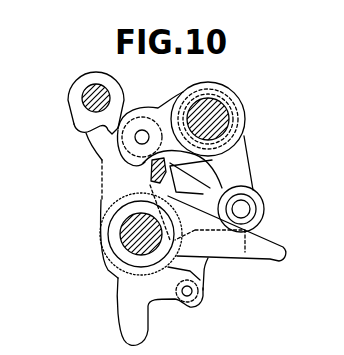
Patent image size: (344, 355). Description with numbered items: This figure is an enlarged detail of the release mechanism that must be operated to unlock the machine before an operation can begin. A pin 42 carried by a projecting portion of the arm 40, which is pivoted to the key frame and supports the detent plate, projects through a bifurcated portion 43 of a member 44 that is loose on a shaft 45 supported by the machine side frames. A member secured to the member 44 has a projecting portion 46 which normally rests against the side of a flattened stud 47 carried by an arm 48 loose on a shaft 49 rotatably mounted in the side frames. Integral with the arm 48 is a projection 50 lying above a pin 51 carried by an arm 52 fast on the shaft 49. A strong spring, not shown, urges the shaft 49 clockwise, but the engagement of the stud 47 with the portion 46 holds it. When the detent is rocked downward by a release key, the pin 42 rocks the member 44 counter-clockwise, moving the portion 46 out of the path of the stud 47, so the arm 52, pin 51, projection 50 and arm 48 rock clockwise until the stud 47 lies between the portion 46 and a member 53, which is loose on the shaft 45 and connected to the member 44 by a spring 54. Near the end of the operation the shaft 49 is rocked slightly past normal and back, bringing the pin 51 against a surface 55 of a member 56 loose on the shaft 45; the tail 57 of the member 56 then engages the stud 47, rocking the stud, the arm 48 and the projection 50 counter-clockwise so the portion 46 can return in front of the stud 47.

The arm 40 is at (80, 88).
The pin 42 is at (181, 176).
The bifurcated portion 43 is at (204, 163).
The member 44 is at (208, 180).
The shaft 45 is at (130, 245).
The projecting portion 46 is at (235, 212).
The flattened stud 47 is at (247, 210).
The arm 48 is at (239, 153).
The shaft 49 is at (222, 115).
The projection 50 is at (157, 107).
The pin 51 is at (143, 130).
The arm 52 is at (225, 100).
The member 53 is at (214, 260).
The spring 54 is at (204, 272).
The surface 55 is at (96, 126).
The member 56 is at (112, 210).
The tail 57 is at (274, 240).